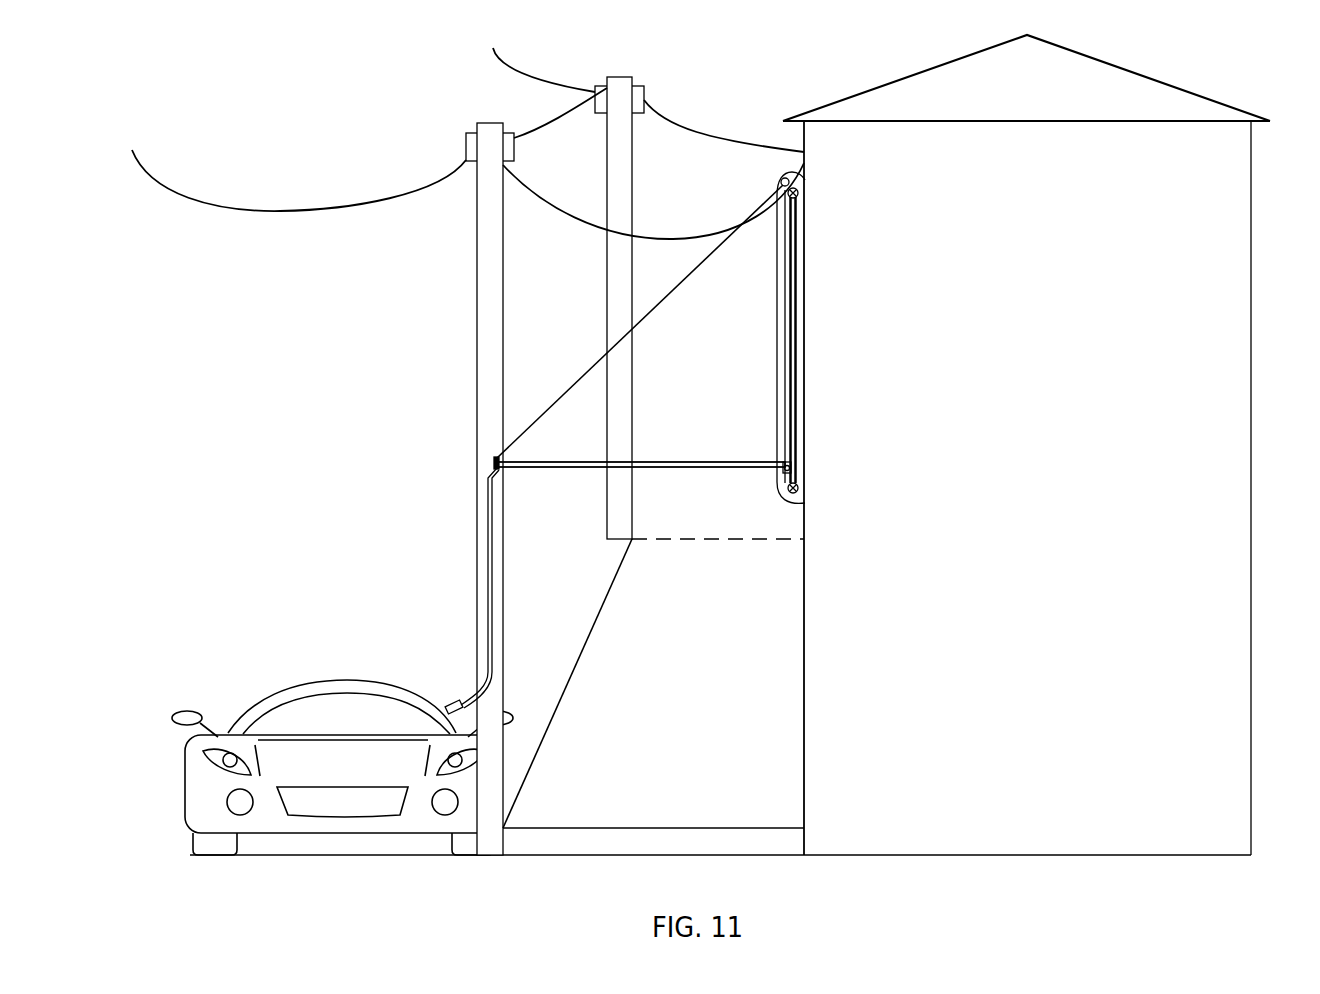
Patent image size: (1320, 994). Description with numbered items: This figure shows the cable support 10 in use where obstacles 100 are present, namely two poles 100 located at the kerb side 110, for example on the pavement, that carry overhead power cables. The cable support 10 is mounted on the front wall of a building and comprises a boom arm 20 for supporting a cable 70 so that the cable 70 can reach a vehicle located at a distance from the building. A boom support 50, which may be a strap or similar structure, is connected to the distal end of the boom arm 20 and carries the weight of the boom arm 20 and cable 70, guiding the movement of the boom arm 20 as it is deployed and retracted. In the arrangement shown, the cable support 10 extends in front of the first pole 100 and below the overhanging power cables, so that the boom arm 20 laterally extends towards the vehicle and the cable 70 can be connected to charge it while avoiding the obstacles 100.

The cable support 10 is at (766, 423).
The boom arm 20 is at (695, 470).
The boom support 50 is at (558, 388).
The cable 70 is at (491, 570).
The obstacles 100 is at (606, 210).
The kerb side 110 is at (581, 656).